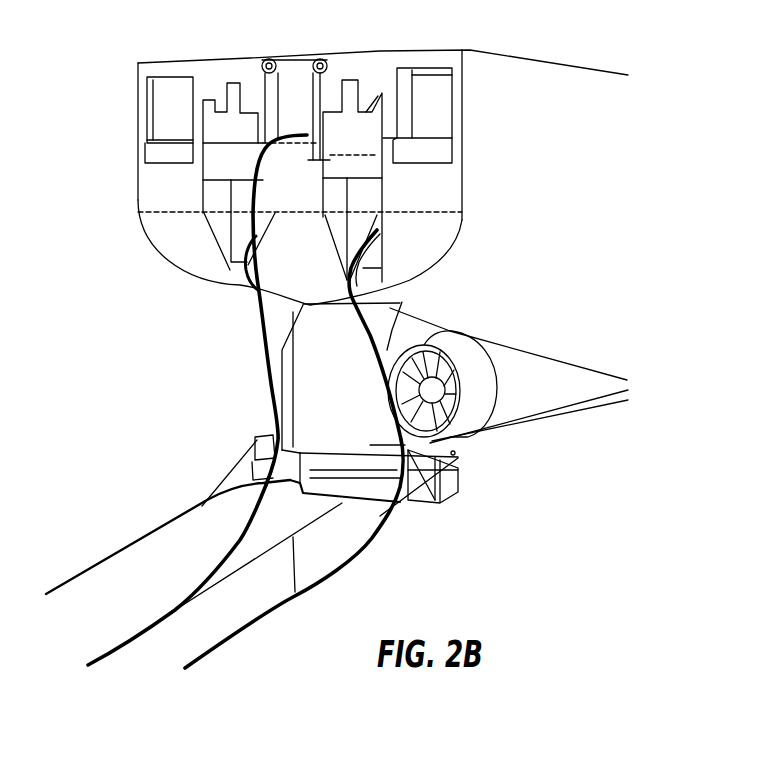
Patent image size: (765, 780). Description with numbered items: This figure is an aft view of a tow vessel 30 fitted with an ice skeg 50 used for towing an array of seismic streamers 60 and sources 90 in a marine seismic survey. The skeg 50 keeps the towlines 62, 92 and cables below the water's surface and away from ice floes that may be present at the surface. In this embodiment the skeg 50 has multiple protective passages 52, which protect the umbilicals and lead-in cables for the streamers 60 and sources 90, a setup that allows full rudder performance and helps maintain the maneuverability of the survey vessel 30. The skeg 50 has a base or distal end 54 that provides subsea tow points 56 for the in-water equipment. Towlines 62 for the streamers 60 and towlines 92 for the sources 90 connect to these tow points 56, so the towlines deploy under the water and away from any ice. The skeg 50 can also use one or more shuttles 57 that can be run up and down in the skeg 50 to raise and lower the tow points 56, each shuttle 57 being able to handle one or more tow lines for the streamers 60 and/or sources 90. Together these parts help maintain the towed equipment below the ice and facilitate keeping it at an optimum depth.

The tow vessel 30 is at (575, 68).
The ice skeg 50 is at (217, 339).
The protective passage 52 is at (268, 407).
The distal end 54 is at (455, 495).
The tow points 56 is at (342, 505).
The shuttle 57 is at (256, 442).
The streamers 60 is at (132, 640).
The towlines 62 is at (295, 592).
The sources 90 is at (108, 557).
The towlines 92 is at (223, 478).